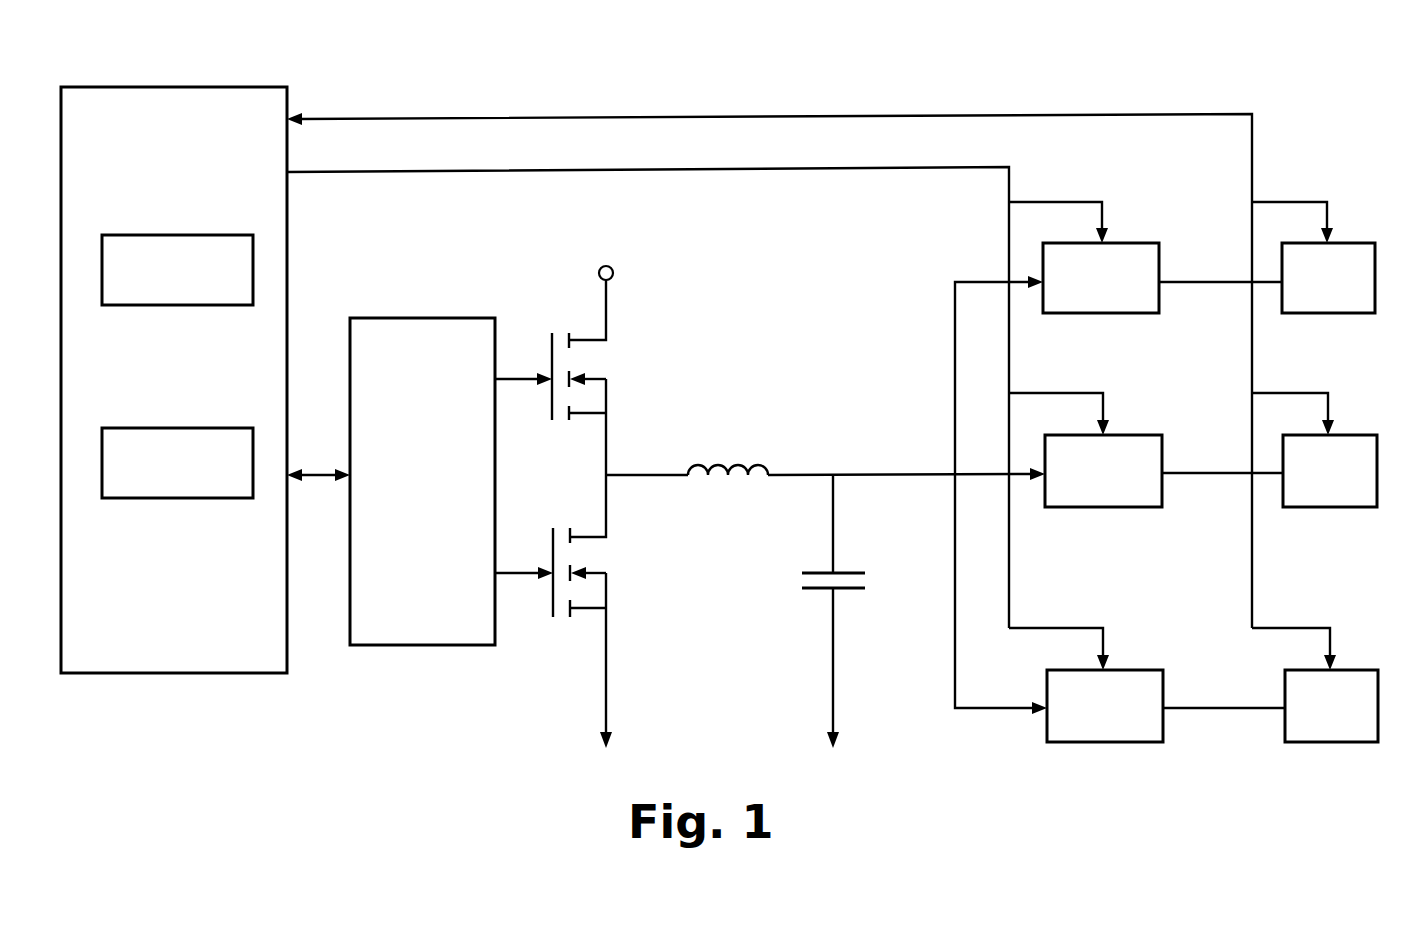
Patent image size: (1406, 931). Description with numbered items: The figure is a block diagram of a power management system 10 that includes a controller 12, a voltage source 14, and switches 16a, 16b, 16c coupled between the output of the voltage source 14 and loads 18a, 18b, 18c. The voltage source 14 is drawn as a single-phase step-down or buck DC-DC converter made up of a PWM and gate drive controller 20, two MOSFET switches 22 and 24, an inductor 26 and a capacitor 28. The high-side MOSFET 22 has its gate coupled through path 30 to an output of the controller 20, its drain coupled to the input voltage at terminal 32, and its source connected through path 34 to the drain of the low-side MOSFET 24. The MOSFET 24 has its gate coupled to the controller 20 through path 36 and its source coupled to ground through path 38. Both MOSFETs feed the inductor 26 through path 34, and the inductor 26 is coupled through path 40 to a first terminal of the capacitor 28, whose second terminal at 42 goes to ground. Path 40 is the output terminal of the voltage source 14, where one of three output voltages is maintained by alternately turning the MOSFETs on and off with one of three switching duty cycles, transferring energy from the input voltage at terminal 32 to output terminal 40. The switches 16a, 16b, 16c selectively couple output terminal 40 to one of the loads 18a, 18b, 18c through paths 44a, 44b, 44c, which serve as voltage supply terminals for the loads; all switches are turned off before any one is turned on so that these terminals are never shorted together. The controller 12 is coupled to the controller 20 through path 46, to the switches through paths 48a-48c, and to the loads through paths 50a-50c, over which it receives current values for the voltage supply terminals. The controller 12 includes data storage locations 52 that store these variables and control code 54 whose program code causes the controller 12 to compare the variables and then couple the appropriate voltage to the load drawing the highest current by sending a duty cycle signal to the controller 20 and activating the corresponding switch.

The power management system 10 is at (660, 84).
The controller 12 is at (170, 87).
The voltage source 14 is at (484, 790).
The switch 16a is at (1127, 242).
The switch 16b is at (1127, 434).
The switch 16c is at (1130, 669).
The load 18a is at (1355, 242).
The load 18b is at (1355, 434).
The load 18c is at (1357, 669).
The PWM and gate drive controller 20 is at (410, 318).
The MOSFET switch 22 is at (612, 357).
The MOSFET switch 24 is at (615, 556).
The inductor 26 is at (770, 471).
The capacitor 28 is at (843, 572).
The path 30 is at (503, 377).
The terminal 32 is at (613, 272).
The path 34 is at (608, 473).
The path 36 is at (503, 571).
The path 38 is at (608, 675).
The output terminal 40 is at (810, 472).
The second terminal 42 is at (835, 651).
The voltage supply terminal 44a is at (1193, 281).
The voltage supply terminal 44b is at (1193, 472).
The voltage supply terminal 44c is at (1195, 707).
The path 46 is at (318, 472).
The paths 48a-48c is at (400, 171).
The paths 50a-50c is at (398, 117).
The data storage locations 52 is at (165, 235).
The control code 54 is at (165, 428).